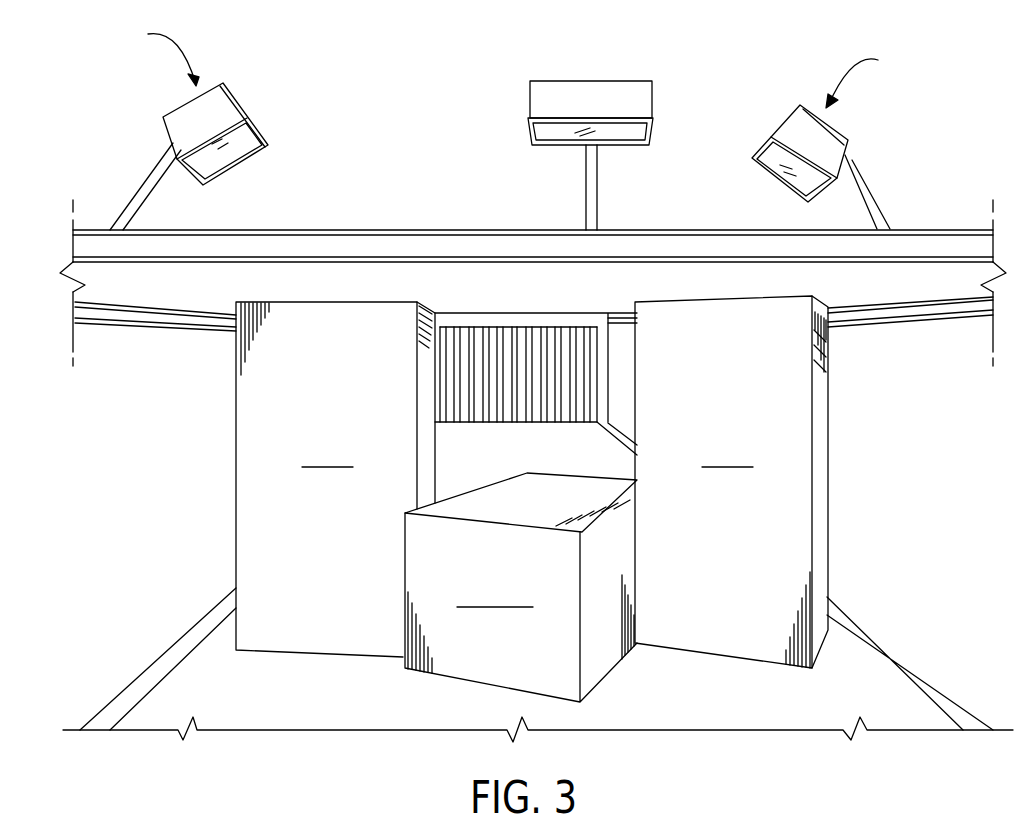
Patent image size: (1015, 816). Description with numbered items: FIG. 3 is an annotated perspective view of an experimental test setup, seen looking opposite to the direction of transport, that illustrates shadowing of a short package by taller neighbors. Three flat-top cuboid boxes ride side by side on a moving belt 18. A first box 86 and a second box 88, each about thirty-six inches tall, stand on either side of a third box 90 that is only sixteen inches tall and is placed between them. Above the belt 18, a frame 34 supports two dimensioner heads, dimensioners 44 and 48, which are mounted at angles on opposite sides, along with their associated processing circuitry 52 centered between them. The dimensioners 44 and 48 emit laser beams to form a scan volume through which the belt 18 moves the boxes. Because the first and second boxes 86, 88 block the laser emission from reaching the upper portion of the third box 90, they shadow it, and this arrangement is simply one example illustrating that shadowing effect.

The belt 18 is at (203, 683).
The frame 34 is at (932, 246).
The dimensioner 44 is at (200, 118).
The dimensioner 48 is at (813, 138).
The processing circuitry 52 is at (595, 100).
The first box 86 is at (722, 615).
The second box 88 is at (338, 610).
The third box 90 is at (478, 508).